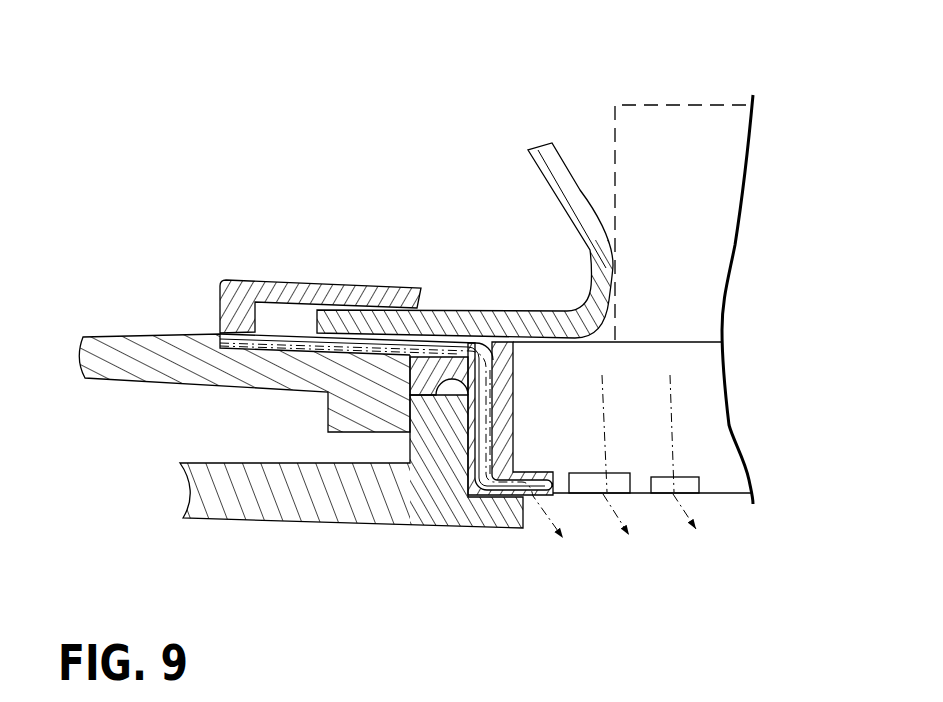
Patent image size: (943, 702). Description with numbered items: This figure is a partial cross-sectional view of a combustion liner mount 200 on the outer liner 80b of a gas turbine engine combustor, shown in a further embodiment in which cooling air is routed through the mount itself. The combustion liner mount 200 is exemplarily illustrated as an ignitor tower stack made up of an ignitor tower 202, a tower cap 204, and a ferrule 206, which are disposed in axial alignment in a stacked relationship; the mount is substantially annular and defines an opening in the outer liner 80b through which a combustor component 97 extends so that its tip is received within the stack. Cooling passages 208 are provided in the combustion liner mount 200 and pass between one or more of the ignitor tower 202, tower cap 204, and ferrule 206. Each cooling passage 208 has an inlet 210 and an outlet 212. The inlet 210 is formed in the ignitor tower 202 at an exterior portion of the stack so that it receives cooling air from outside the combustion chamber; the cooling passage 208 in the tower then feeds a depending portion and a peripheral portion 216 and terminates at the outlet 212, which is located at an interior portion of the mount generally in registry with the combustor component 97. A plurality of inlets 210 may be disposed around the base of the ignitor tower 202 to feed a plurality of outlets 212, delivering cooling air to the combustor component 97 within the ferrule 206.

The combustion liner mount 200 is at (221, 177).
The ignitor tower 202 is at (217, 299).
The tower cap 204 is at (318, 294).
The ferrule 206 is at (553, 181).
The cooling passages 208 is at (277, 345).
The inlet 210 is at (217, 335).
The outlet 212 is at (530, 496).
The peripheral portion 216 is at (498, 478).
The outer liner 80b is at (325, 497).
The combustor component 97 is at (612, 138).